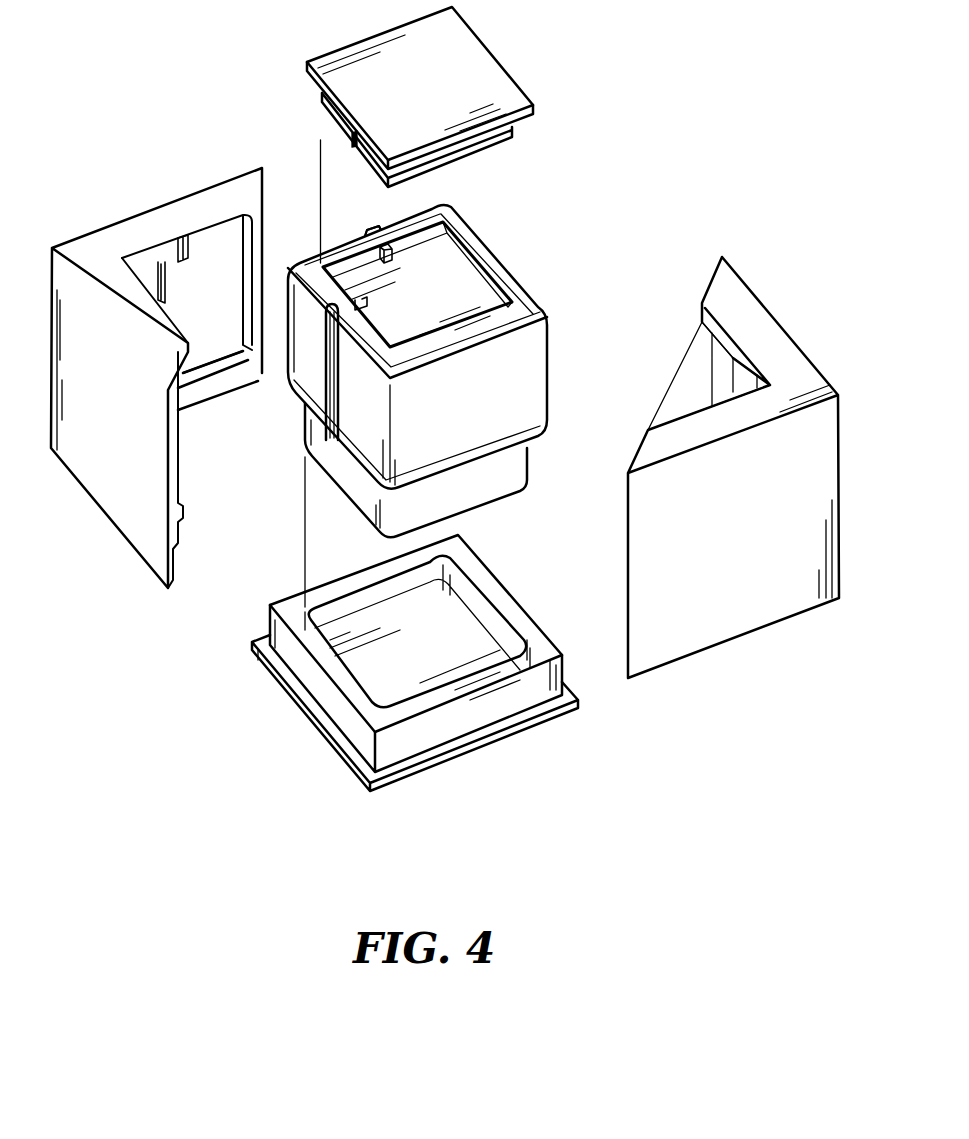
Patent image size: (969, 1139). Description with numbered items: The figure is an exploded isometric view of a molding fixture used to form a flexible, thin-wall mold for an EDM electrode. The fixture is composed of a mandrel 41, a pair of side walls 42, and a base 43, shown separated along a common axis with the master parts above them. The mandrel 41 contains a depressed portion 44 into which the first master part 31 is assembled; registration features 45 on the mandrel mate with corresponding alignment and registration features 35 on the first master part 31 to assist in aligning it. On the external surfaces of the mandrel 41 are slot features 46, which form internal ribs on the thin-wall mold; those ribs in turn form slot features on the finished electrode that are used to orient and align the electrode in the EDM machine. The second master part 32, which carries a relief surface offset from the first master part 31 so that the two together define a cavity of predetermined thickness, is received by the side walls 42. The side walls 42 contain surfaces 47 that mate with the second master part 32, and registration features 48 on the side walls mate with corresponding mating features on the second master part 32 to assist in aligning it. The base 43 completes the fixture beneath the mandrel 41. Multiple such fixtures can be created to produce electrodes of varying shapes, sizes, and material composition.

The first master part 31 is at (493, 145).
The second master part 32 is at (442, 62).
The alignment and registration features 35 is at (352, 145).
The mandrel 41 is at (418, 388).
The side walls 42 is at (445, 431).
The base 43 is at (453, 755).
The depressed portion 44 is at (442, 275).
The registration features 45 is at (363, 303).
The slot features 46 is at (368, 232).
The surfaces 47 is at (217, 232).
The registration features 48 is at (158, 295).